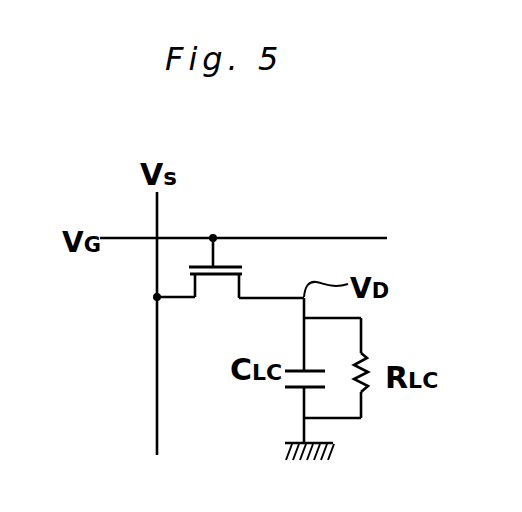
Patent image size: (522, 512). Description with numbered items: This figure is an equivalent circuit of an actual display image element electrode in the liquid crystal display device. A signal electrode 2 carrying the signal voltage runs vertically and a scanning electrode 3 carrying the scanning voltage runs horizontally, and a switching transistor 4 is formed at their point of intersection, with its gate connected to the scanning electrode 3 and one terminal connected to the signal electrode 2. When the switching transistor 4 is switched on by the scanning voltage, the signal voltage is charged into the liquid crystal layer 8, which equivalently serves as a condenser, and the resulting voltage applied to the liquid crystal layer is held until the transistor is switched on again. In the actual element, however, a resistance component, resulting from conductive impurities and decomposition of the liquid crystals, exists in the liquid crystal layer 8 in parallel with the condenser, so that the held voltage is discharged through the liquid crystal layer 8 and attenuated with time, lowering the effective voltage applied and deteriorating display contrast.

The signal electrode 2 is at (157, 382).
The scanning electrode 3 is at (275, 238).
The switching transistor 4 is at (215, 282).
The liquid crystal layer 8 is at (292, 393).